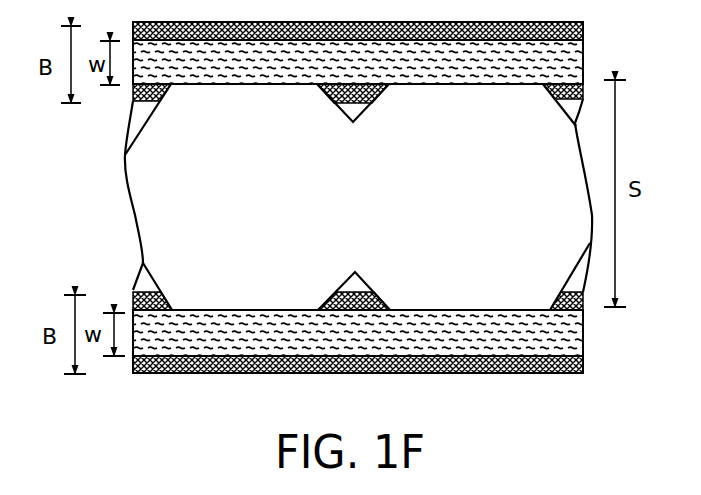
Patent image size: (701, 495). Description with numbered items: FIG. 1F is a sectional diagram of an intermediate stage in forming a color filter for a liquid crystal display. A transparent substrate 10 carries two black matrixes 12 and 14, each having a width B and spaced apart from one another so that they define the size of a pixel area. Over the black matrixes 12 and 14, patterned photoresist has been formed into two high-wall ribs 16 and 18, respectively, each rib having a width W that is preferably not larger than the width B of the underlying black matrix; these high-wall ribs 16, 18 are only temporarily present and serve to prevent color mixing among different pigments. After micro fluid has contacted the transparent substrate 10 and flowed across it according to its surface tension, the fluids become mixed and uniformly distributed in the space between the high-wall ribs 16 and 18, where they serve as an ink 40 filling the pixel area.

The transparent substrate 10 is at (130, 187).
The black matrix 12 is at (583, 27).
The black matrix 14 is at (583, 358).
The high-wall rib 16 is at (583, 328).
The high-wall rib 18 is at (583, 57).
The ink 40 is at (372, 208).